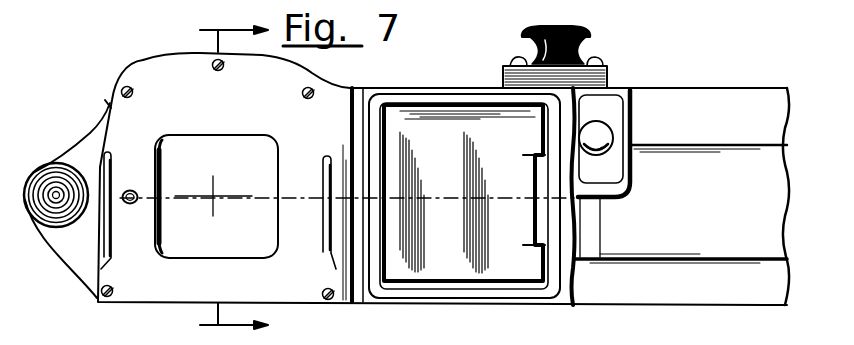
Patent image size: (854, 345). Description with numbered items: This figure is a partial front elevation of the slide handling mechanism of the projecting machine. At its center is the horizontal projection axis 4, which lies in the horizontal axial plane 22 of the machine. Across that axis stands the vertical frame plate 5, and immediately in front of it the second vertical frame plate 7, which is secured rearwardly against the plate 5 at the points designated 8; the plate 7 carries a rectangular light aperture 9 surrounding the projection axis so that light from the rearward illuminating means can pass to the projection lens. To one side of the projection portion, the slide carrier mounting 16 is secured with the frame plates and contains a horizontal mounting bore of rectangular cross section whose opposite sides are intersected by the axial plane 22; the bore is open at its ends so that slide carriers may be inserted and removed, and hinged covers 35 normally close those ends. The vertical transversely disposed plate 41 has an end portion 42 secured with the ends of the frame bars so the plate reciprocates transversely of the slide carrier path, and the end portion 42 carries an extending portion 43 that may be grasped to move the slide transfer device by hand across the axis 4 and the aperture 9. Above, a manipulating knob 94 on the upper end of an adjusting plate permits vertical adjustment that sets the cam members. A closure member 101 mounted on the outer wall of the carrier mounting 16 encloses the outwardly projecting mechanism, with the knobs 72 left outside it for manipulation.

The horizontal projection axis 4 is at (213, 195).
The vertical frame plate 5 is at (234, 174).
The second vertical frame plate 7 is at (143, 60).
The securing means 8 is at (305, 90).
The rectangular light aperture 9 is at (206, 136).
The slide carrier mounting 16 is at (424, 88).
The horizontal axial plane 22 is at (456, 195).
The hinged covers 35 is at (472, 270).
The vertical transversely disposed plate 41 is at (108, 104).
The end portion 42 is at (93, 132).
The extending portion 43 is at (51, 170).
The knobs 72 is at (612, 134).
The manipulating knob 94 is at (584, 34).
The closure member 101 is at (710, 97).